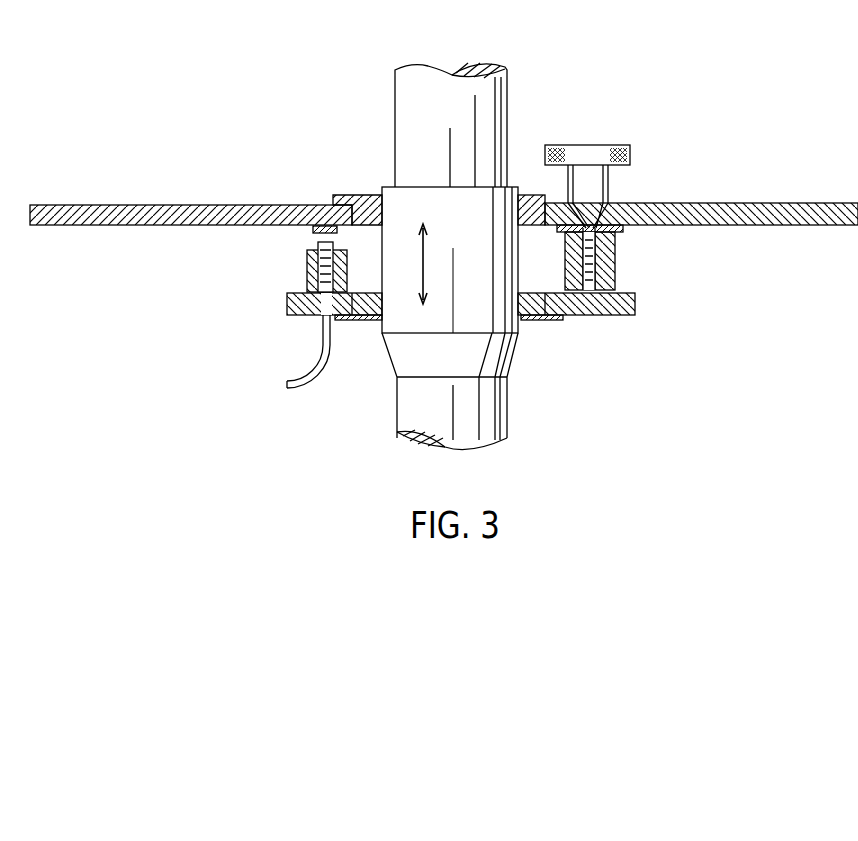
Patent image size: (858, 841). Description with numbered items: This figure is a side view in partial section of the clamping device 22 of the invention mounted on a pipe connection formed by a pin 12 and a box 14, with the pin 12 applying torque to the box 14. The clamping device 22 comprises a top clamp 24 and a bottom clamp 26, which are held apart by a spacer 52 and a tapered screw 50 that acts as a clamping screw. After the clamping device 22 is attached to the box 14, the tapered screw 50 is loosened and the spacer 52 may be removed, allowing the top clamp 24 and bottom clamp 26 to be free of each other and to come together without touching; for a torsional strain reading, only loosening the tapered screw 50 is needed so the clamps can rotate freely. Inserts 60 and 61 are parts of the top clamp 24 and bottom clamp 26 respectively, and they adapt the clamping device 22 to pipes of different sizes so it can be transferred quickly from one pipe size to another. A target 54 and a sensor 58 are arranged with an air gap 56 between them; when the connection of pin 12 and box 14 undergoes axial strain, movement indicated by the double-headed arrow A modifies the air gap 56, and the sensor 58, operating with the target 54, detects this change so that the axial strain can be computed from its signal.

The pin 12 is at (500, 92).
The box 14 is at (520, 333).
The clamping device 22 is at (674, 148).
The top clamp 24 is at (830, 227).
The bottom clamp 26 is at (635, 304).
The tapered screw 50 is at (625, 205).
The spacer 52 is at (620, 229).
The target 54 is at (317, 238).
The air gap 56 is at (307, 253).
The sensor 58 is at (323, 262).
The insert 60 is at (527, 198).
The insert 61 is at (563, 318).